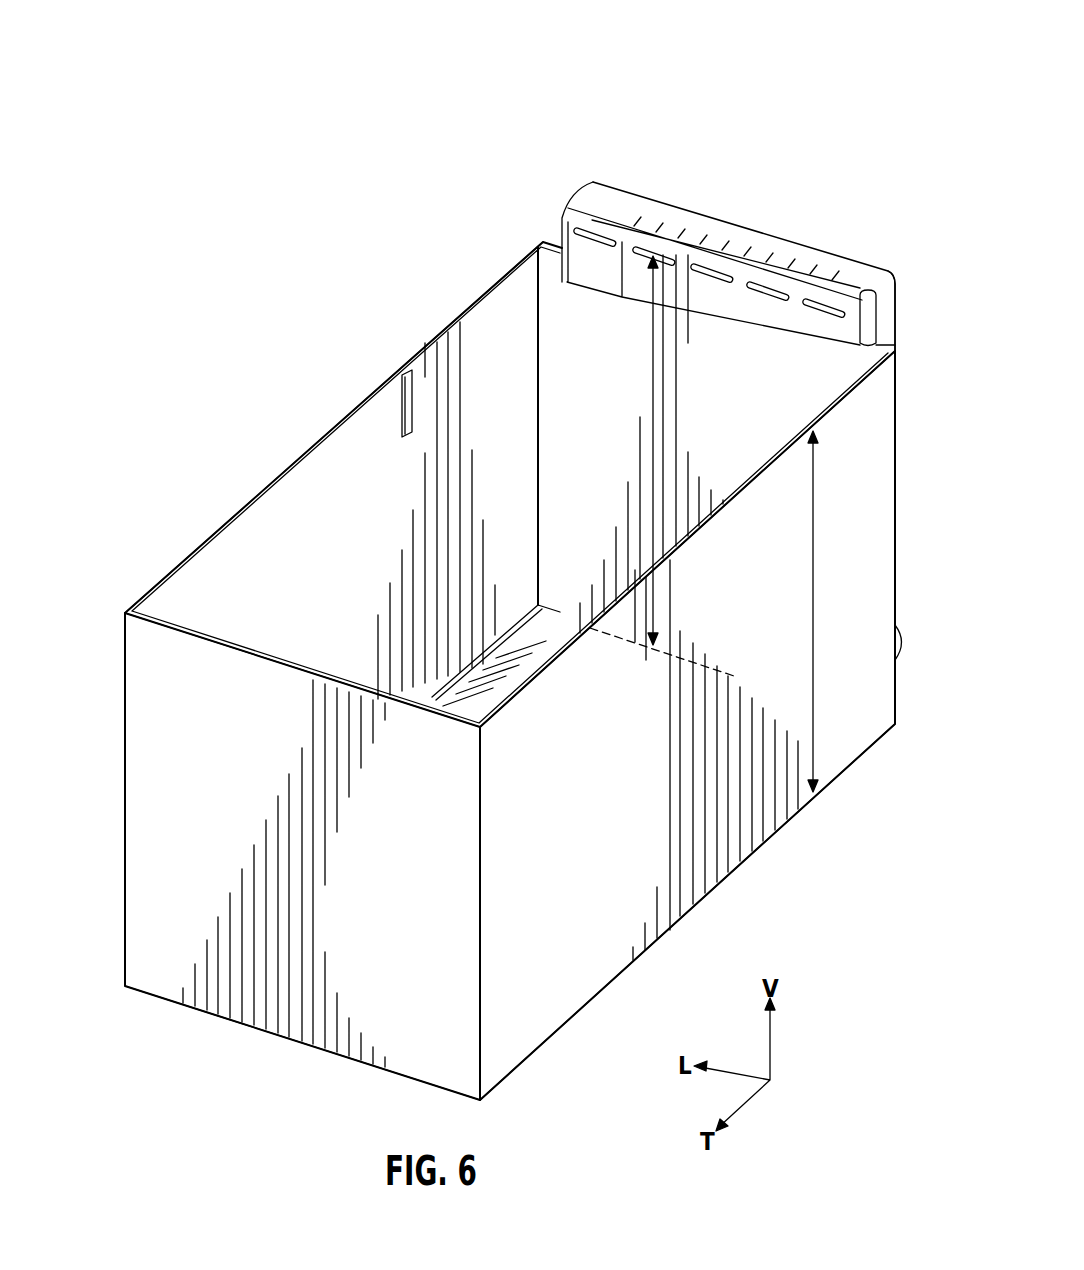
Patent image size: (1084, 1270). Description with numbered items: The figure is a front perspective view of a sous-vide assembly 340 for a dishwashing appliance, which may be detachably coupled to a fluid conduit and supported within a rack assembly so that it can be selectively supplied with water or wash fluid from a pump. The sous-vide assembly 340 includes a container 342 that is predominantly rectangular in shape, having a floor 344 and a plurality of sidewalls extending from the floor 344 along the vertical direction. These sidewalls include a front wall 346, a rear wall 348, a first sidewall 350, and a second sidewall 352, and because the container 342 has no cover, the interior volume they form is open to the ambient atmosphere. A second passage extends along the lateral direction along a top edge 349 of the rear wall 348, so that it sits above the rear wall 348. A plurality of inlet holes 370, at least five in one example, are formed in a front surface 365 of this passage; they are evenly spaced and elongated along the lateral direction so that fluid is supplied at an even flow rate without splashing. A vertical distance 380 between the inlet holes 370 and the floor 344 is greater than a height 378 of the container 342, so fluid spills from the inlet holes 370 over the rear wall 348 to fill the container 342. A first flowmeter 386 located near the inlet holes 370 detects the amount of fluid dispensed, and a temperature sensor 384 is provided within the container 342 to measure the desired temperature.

The sous-vide assembly 340 is at (750, 78).
The container 342 is at (206, 390).
The floor 344 is at (488, 688).
The front wall 346 is at (152, 935).
The rear wall 348 is at (557, 302).
The top edge 349 is at (896, 333).
The first sidewall 350 is at (190, 598).
The second sidewall 352 is at (662, 890).
The front surface 365 is at (887, 350).
The inlet holes 370 is at (774, 299).
The height 378 is at (815, 556).
The vertical distance 380 is at (655, 366).
The temperature sensor 384 is at (405, 402).
The first flowmeter 386 is at (560, 236).